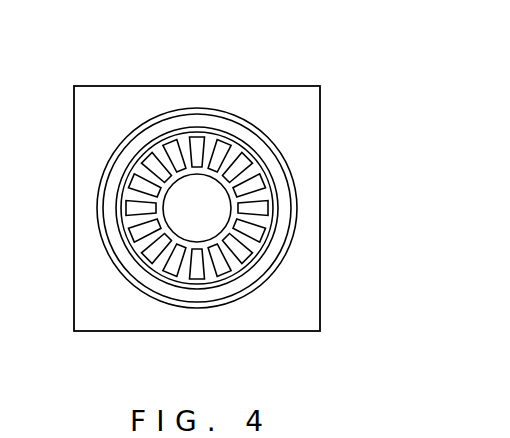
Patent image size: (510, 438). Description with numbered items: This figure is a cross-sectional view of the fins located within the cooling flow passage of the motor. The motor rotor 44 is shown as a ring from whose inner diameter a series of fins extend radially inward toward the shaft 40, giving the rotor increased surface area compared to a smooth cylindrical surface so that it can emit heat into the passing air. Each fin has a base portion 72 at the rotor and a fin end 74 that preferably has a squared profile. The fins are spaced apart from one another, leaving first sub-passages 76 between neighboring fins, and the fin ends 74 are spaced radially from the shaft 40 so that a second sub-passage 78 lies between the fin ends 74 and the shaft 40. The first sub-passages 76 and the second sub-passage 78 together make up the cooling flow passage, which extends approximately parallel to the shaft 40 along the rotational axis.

The shaft 40 is at (232, 209).
The motor rotor 44 is at (137, 285).
The base portion 72 is at (199, 155).
The fin end 74 is at (180, 162).
The first sub-passages 76 is at (258, 179).
The second sub-passage 78 is at (210, 246).